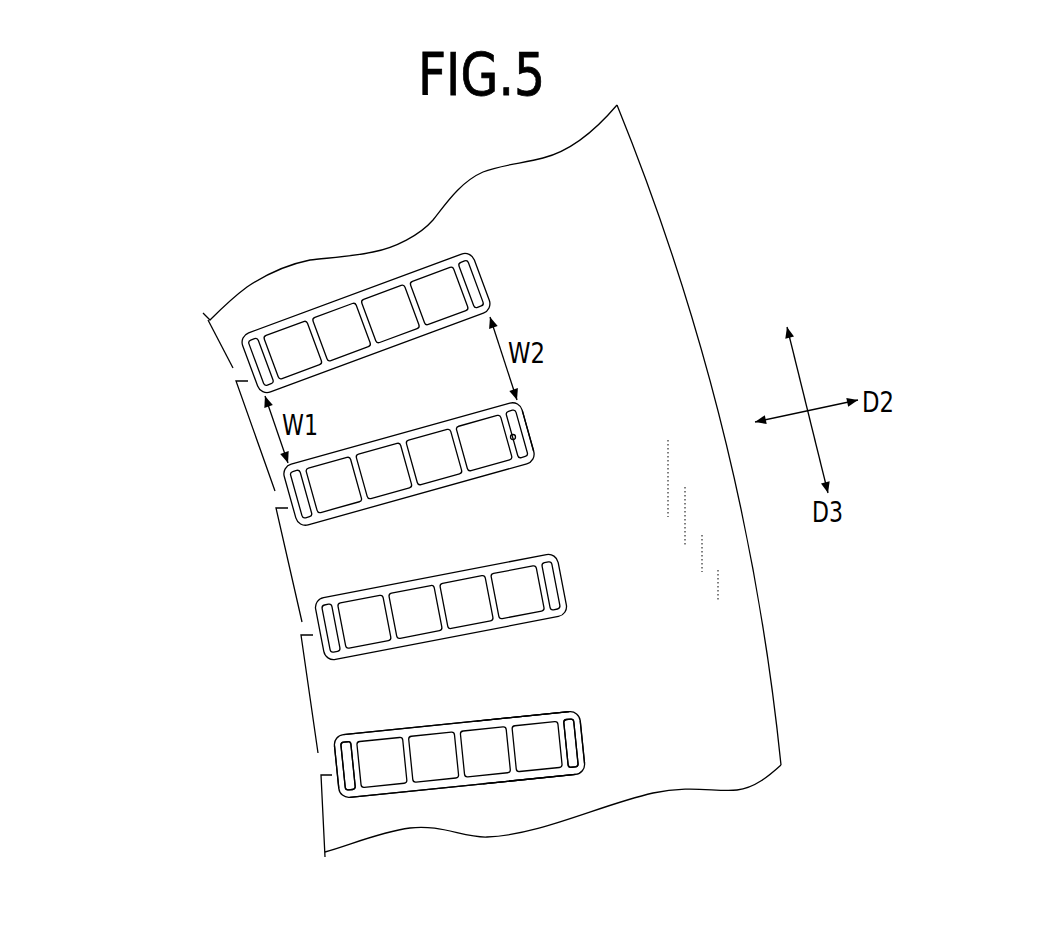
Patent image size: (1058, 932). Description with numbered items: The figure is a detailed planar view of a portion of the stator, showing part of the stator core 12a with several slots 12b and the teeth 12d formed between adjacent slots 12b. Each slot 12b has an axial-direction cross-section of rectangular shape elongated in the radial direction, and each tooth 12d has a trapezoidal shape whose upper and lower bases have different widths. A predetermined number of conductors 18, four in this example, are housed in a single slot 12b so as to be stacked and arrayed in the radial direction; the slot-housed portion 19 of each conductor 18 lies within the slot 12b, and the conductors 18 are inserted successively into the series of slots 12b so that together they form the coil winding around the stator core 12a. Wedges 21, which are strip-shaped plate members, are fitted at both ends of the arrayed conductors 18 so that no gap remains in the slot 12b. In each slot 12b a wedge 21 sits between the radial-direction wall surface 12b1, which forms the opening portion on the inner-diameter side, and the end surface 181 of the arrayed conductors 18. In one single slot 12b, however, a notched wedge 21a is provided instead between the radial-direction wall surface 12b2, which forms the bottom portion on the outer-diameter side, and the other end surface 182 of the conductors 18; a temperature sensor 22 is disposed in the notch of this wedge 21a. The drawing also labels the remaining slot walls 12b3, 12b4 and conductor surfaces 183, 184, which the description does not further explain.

The stator core 12a is at (627, 263).
The slot 12b is at (470, 425).
The radial-direction wall surface 12b1 is at (322, 751).
The radial-direction wall surface 12b2 is at (590, 717).
The outer wall of insertion hole 12b3 is at (550, 703).
The inner wall of insertion hole 12b4 is at (528, 786).
The tooth 12d is at (337, 692).
The conductor 18 is at (388, 490).
The slot-housed portion 19 is at (413, 600).
The wedge 21 is at (307, 517).
The wedge 21a is at (535, 458).
The temperature sensor 22 is at (515, 437).
The end surface 181 is at (358, 775).
The end surface 182 is at (560, 758).
The outer face of magnet 183 is at (430, 727).
The inner face of magnet 184 is at (448, 784).